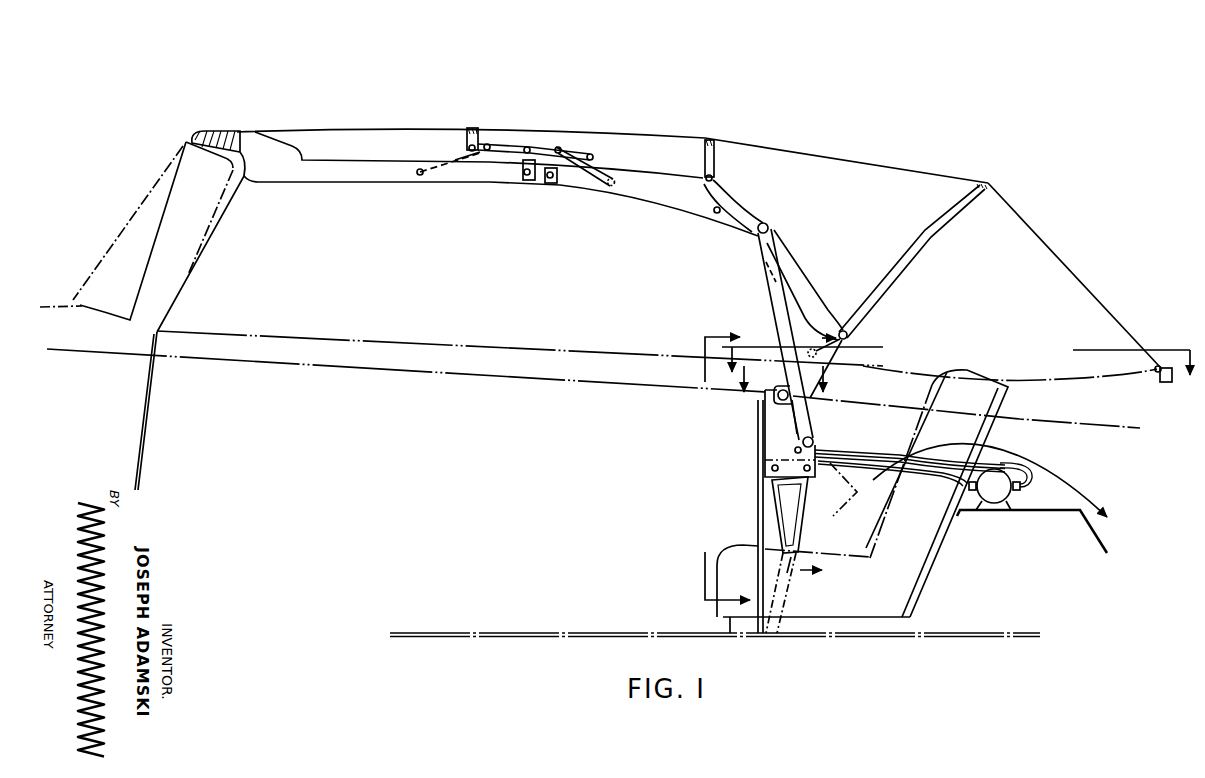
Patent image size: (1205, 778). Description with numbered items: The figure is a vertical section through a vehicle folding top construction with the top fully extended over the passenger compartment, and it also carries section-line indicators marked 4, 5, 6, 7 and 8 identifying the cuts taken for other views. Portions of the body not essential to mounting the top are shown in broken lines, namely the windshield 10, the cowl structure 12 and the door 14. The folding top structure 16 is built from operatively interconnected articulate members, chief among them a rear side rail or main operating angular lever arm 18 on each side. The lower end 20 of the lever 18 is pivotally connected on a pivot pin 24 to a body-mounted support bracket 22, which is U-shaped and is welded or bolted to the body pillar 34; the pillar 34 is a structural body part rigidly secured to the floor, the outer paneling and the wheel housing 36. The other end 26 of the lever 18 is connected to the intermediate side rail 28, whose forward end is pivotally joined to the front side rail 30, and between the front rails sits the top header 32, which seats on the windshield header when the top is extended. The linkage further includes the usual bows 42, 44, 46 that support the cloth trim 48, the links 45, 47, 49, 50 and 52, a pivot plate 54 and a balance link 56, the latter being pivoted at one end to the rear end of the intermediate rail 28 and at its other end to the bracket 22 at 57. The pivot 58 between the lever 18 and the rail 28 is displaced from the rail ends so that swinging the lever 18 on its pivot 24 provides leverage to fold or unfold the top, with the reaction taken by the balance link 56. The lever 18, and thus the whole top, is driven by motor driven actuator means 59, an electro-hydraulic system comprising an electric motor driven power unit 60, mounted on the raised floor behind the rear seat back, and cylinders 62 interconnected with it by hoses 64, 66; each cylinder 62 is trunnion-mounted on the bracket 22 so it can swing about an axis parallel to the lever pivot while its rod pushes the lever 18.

The section line 4- 4 is at (951, 355).
The section line 5- 5 is at (719, 470).
The section line 6- 6 is at (811, 455).
The section line 7- 7 is at (792, 380).
The section line 8- 8 is at (796, 338).
The windshield 10 is at (130, 238).
The cowl structure 12 is at (84, 328).
The door 14 is at (372, 360).
The folding top structure 16 is at (673, 112).
The main operating angular lever arm 18 is at (797, 262).
The lower end of angular lever 20 is at (778, 348).
The support bracket 22 is at (781, 418).
The pivot pin 24 is at (780, 398).
The other end of angular lever 26 is at (738, 190).
The intermediate side rail 28 is at (655, 196).
The front side rail 30 is at (480, 177).
The top header 32 is at (221, 130).
The body pillar 34 is at (757, 493).
The wheel housing 36 is at (1073, 488).
The bow 42 is at (908, 256).
The bow 44 is at (714, 157).
The link 45 is at (623, 163).
The bow 46 is at (473, 127).
The link 47 is at (577, 149).
The cloth trim 48 is at (928, 170).
The link 49 is at (505, 146).
The link 50 is at (563, 184).
The link 52 is at (452, 158).
The pivot plate 54 is at (538, 181).
The balance link 56 is at (767, 283).
The pivot connection of balance link 57 is at (816, 439).
The pivot 58 is at (714, 213).
The motor driven actuator means 59 is at (1016, 500).
The electric motor driven power unit 60 is at (992, 502).
The cylinder 62 is at (783, 507).
The hose 64 is at (1025, 466).
The hose 66 is at (950, 477).